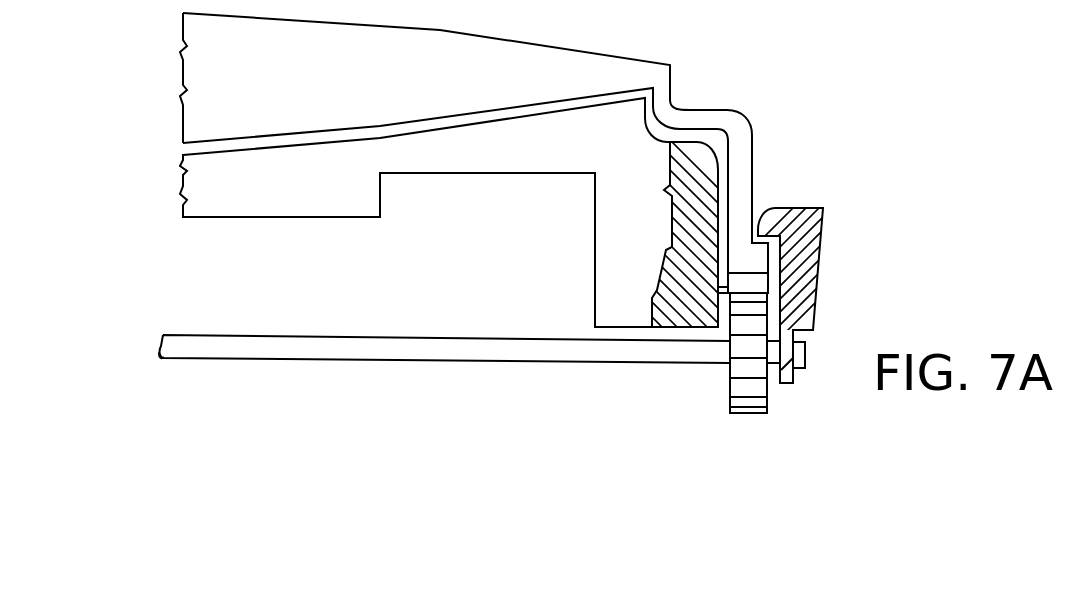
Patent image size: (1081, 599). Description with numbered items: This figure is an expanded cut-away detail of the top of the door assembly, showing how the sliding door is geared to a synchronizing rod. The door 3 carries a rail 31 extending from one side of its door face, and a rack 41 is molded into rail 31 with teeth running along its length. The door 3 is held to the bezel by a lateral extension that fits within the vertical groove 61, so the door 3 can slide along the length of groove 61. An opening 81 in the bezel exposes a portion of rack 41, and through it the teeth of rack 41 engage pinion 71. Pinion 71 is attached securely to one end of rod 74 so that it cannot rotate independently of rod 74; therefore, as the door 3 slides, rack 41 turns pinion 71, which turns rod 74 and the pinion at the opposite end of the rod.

The door 3 is at (573, 49).
The rail 31 is at (753, 170).
The rack 41 is at (758, 283).
The groove 61 is at (788, 252).
The pinion 71 is at (767, 388).
The rod 74 is at (252, 334).
The opening 81 is at (724, 313).